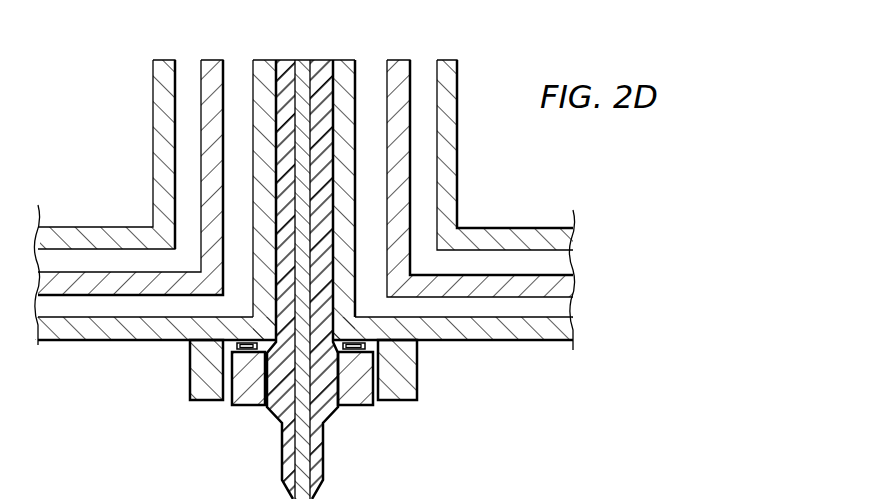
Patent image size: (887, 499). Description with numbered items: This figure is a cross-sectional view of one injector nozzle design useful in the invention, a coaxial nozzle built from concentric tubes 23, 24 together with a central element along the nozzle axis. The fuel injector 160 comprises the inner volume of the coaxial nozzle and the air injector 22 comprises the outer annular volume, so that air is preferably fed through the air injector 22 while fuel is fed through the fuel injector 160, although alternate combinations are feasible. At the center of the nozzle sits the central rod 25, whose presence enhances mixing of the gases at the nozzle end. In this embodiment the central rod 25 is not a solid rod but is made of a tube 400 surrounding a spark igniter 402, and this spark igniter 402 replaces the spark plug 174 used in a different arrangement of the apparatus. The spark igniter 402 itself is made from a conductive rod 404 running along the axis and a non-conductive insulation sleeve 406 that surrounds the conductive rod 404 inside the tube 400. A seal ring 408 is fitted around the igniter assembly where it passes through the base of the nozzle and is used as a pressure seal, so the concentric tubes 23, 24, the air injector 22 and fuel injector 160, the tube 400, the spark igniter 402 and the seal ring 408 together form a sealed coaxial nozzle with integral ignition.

The air injector 22 is at (422, 195).
The concentric tube 23 is at (455, 128).
The concentric tube 24 is at (207, 156).
The central rod 25 is at (257, 205).
The fuel injector 160 is at (373, 183).
The spark plug 174 is at (325, 477).
The tube 400 is at (250, 255).
The spark igniter 402 is at (185, 255).
The conductive rod 404 is at (305, 68).
The non-conductive insulation sleeve 406 is at (282, 104).
The seal ring 408 is at (367, 360).